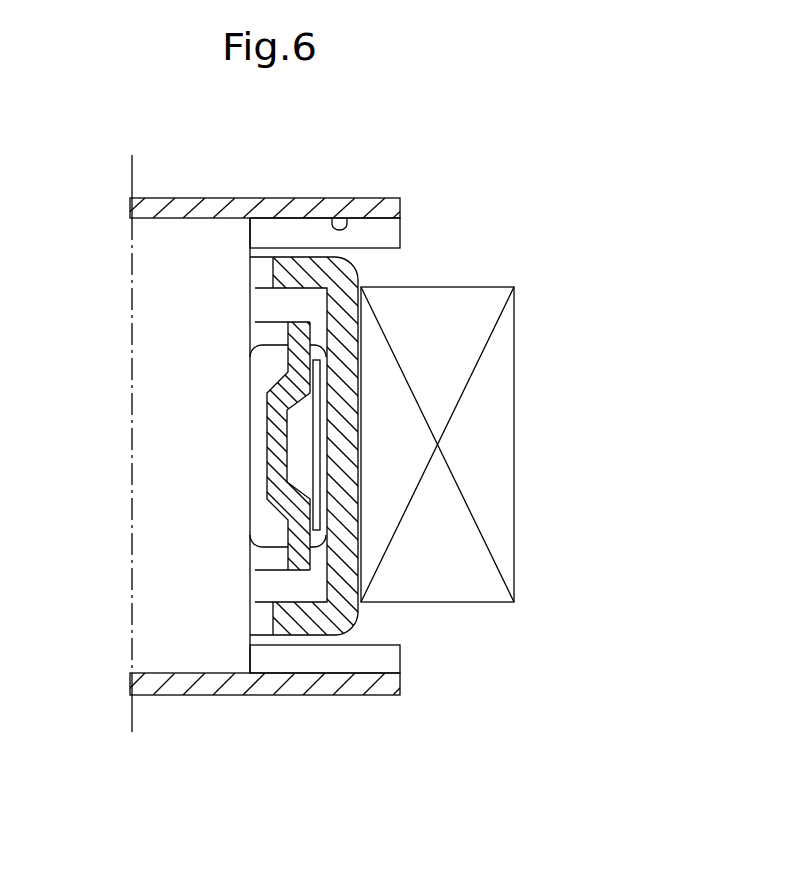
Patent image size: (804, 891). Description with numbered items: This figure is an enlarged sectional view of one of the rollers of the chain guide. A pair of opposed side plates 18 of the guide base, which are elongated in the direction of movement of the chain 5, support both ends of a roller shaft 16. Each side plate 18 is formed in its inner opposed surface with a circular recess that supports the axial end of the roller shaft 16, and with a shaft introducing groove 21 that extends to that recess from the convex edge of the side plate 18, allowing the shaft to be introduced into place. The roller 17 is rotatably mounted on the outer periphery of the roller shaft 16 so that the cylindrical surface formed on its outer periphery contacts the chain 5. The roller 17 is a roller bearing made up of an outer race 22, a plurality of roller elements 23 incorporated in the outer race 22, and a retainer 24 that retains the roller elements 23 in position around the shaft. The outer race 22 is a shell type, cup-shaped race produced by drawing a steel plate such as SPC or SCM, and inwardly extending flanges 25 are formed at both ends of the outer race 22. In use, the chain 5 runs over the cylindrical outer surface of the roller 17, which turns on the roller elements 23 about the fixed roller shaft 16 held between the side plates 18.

The chain 5 is at (507, 338).
The roller shaft 16 is at (188, 240).
The roller 17 is at (358, 270).
The side plate 18 is at (395, 210).
The shaft introducing groove 21 is at (347, 218).
The outer race 22 is at (360, 377).
The roller element 23 is at (307, 440).
The retainer 24 is at (300, 505).
The flange 25 is at (292, 268).